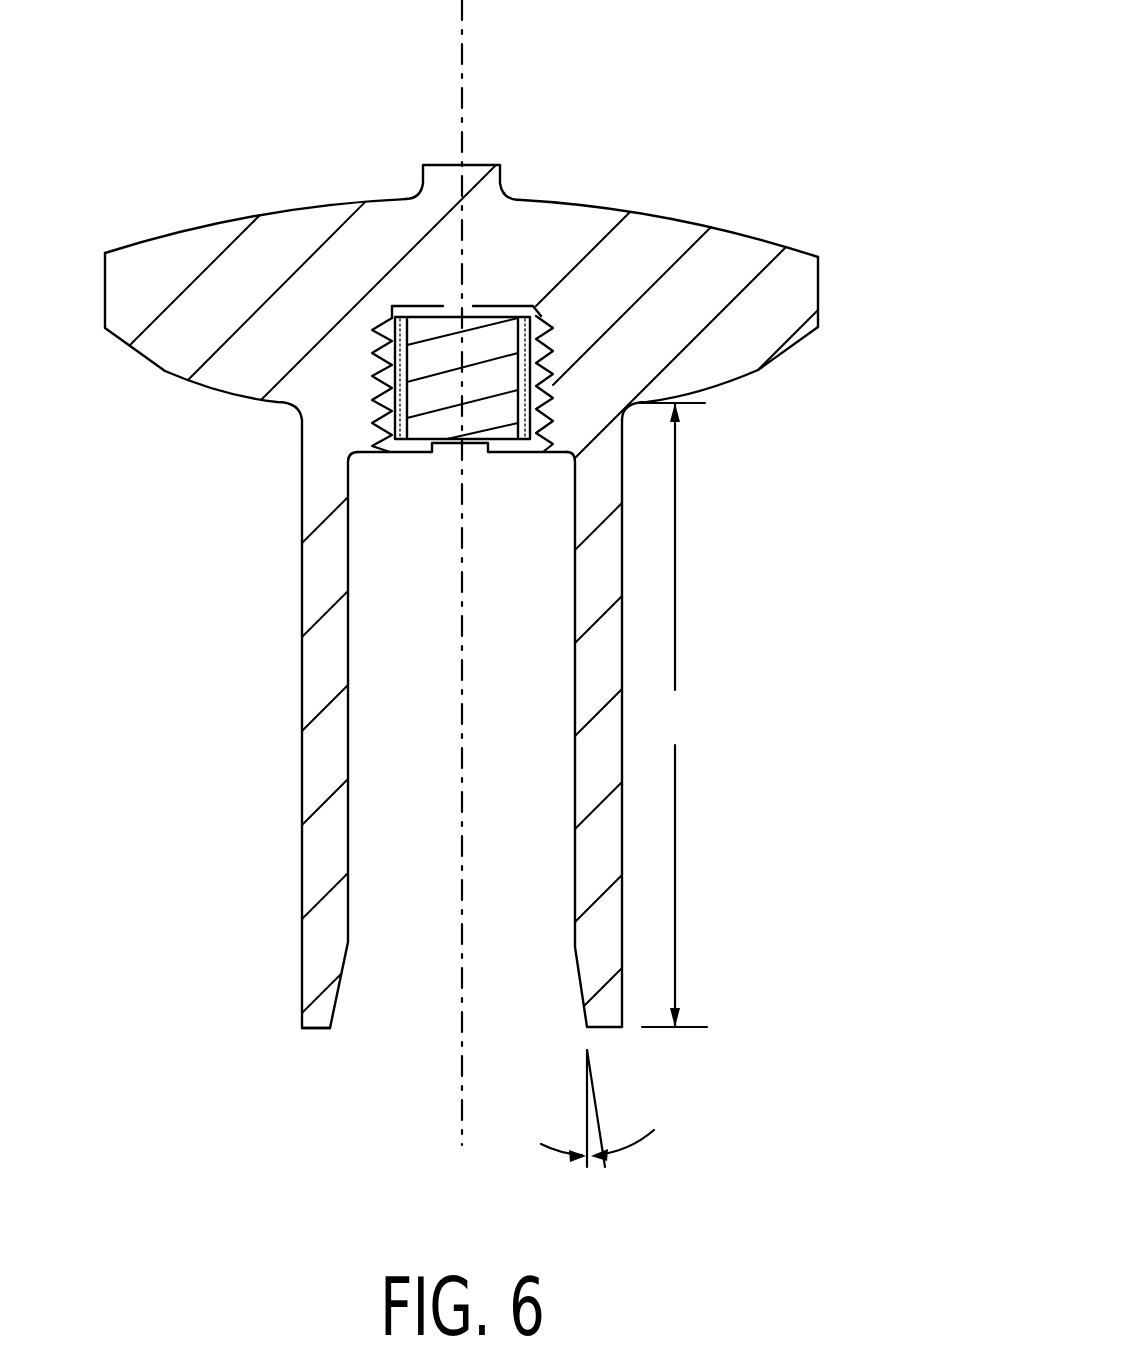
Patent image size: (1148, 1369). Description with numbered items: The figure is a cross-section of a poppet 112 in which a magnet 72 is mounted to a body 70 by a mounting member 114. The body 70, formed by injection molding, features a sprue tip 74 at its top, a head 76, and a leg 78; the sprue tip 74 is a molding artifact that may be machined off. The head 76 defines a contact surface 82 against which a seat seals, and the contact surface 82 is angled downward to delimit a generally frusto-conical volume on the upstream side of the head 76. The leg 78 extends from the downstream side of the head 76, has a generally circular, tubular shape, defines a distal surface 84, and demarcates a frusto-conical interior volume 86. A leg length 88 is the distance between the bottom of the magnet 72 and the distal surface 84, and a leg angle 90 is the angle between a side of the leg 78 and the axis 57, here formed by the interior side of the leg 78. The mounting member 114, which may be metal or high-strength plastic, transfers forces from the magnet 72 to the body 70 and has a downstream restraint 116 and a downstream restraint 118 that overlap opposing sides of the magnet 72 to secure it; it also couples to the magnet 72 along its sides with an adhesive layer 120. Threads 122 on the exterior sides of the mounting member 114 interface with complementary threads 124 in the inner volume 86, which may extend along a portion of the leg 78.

The axis 57 is at (468, 50).
The body 70 is at (220, 282).
The magnet 72 is at (497, 335).
The sprue tip 74 is at (443, 165).
The head 76 is at (820, 289).
The leg 78 is at (317, 583).
The contact surface 82 is at (747, 230).
The distal surface 84 is at (318, 1032).
The interior volume 86 is at (407, 940).
The leg length 88 is at (673, 715).
The leg angle 90 is at (637, 1143).
The poppet 112 is at (697, 167).
The mounting member 114 is at (398, 457).
The downstream restraint 116 is at (507, 455).
The downstream restraint 118 is at (421, 300).
The adhesive layer 120 is at (510, 335).
The threads 122 is at (382, 422).
The complementary threads 124 is at (423, 305).